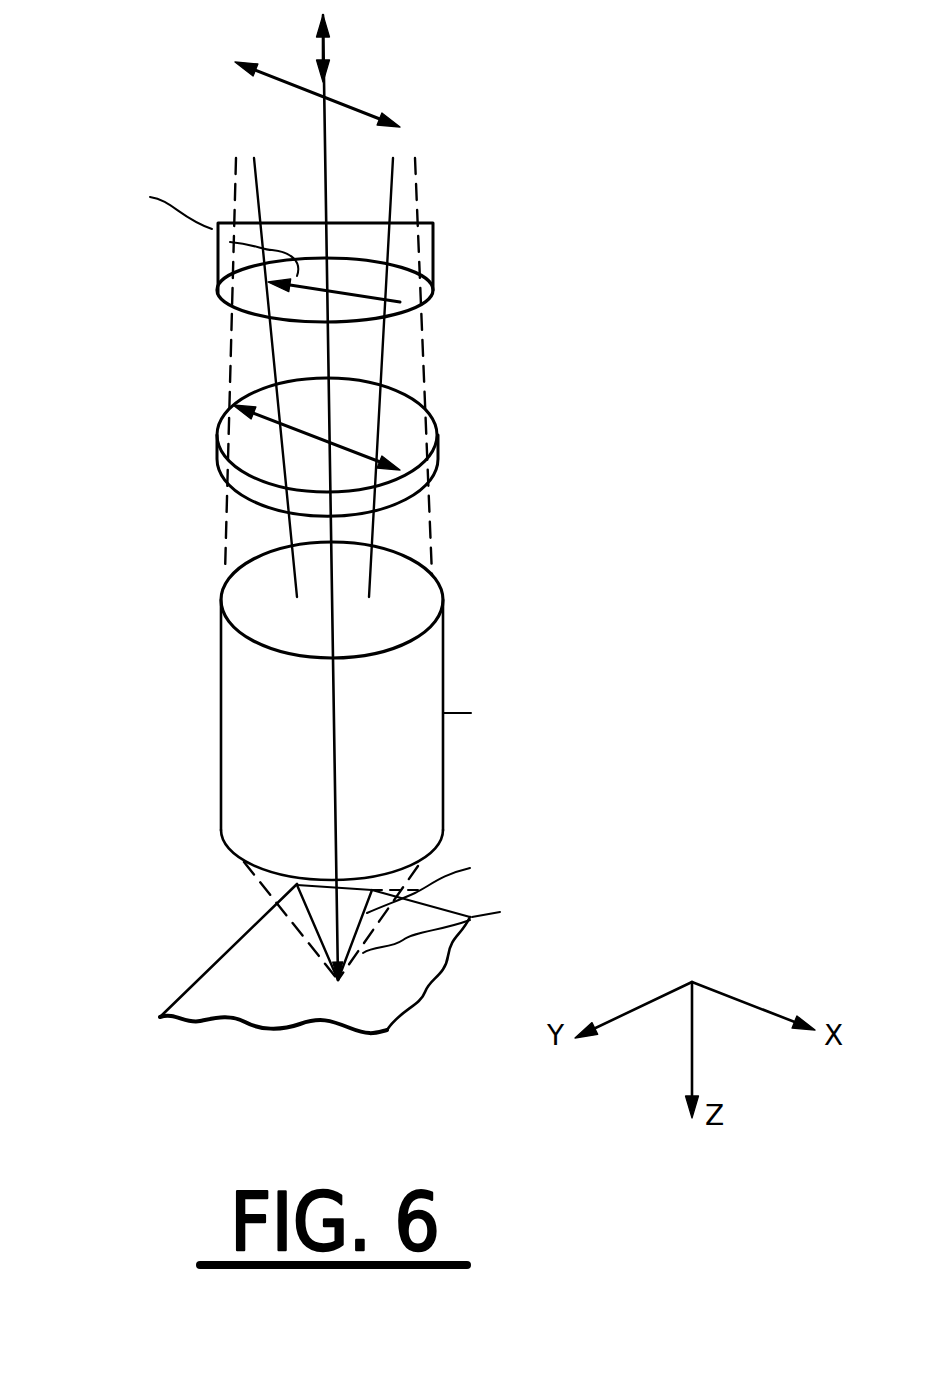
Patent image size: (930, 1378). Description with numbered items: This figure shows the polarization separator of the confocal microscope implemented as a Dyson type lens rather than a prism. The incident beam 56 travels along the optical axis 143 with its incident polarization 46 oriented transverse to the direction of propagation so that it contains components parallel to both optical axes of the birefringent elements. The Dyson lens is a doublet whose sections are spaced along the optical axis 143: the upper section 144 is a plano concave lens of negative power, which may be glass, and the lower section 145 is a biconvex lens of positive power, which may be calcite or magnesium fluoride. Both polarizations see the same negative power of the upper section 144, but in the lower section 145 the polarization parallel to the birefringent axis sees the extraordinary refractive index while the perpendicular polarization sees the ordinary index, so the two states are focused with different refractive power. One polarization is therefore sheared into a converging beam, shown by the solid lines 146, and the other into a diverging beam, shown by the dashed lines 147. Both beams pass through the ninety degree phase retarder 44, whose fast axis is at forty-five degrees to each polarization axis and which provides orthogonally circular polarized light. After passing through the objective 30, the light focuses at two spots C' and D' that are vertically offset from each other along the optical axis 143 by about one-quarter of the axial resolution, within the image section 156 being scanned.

The objective 30 is at (420, 616).
The 90° phase retarder 44 is at (410, 437).
The incident polarization 46 is at (352, 105).
The incident beam 56 is at (320, 45).
The optical axis 143 is at (321, 135).
The upper section 144 is at (427, 246).
The lower section 145 is at (418, 300).
The solid lines 146 is at (267, 352).
The dashed lines 147 is at (233, 367).
The sample surface 156 is at (200, 1002).